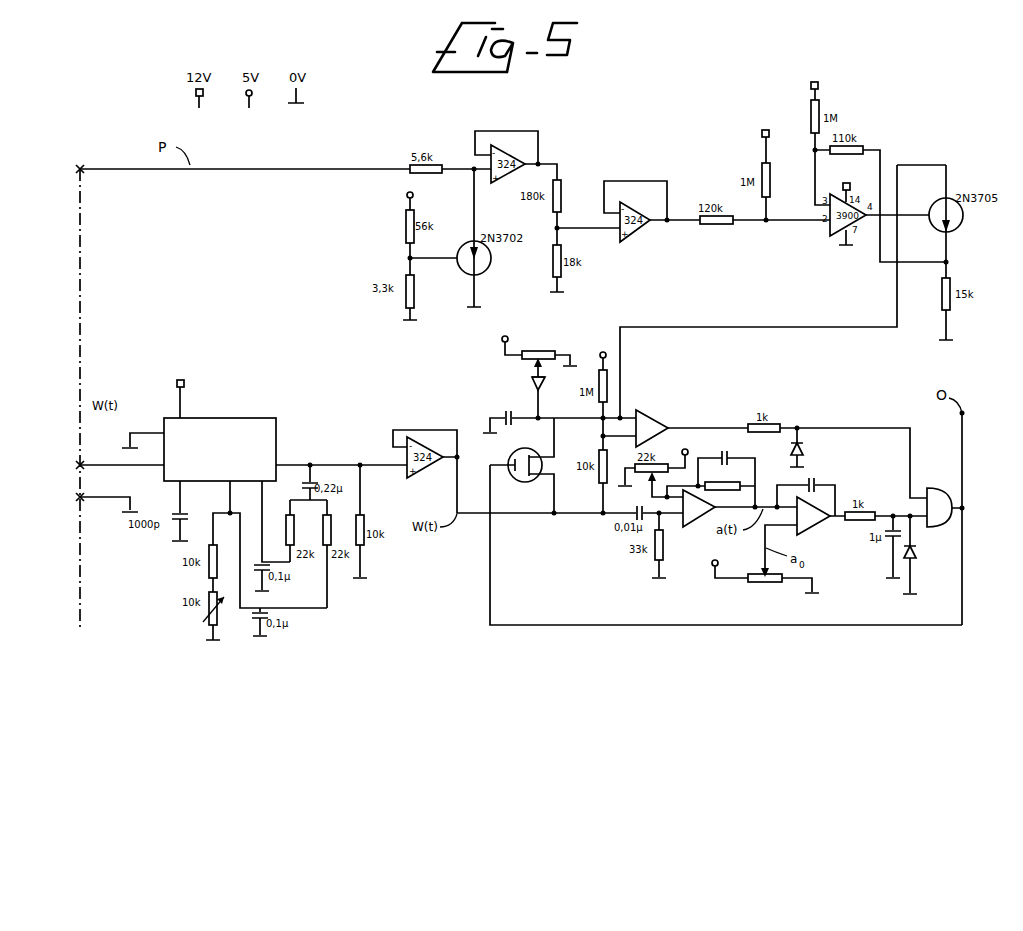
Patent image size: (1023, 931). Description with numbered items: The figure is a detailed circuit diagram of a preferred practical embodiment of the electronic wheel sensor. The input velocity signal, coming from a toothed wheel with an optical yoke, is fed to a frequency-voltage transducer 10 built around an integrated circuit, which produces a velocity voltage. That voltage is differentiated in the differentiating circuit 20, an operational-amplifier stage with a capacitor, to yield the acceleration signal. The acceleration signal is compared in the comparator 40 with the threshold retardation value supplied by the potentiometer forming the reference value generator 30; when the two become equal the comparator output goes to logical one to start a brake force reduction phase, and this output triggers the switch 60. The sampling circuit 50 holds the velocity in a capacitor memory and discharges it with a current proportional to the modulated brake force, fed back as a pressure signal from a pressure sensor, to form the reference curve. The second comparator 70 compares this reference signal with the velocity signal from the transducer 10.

The frequency-voltage transducer 10 is at (246, 400).
The differentiating circuit 20 is at (700, 452).
The reference value generator 30 is at (740, 594).
The comparator 40 is at (823, 532).
The sampling circuit 50 is at (490, 394).
The switch 60 is at (930, 488).
The second comparator 70 is at (645, 410).